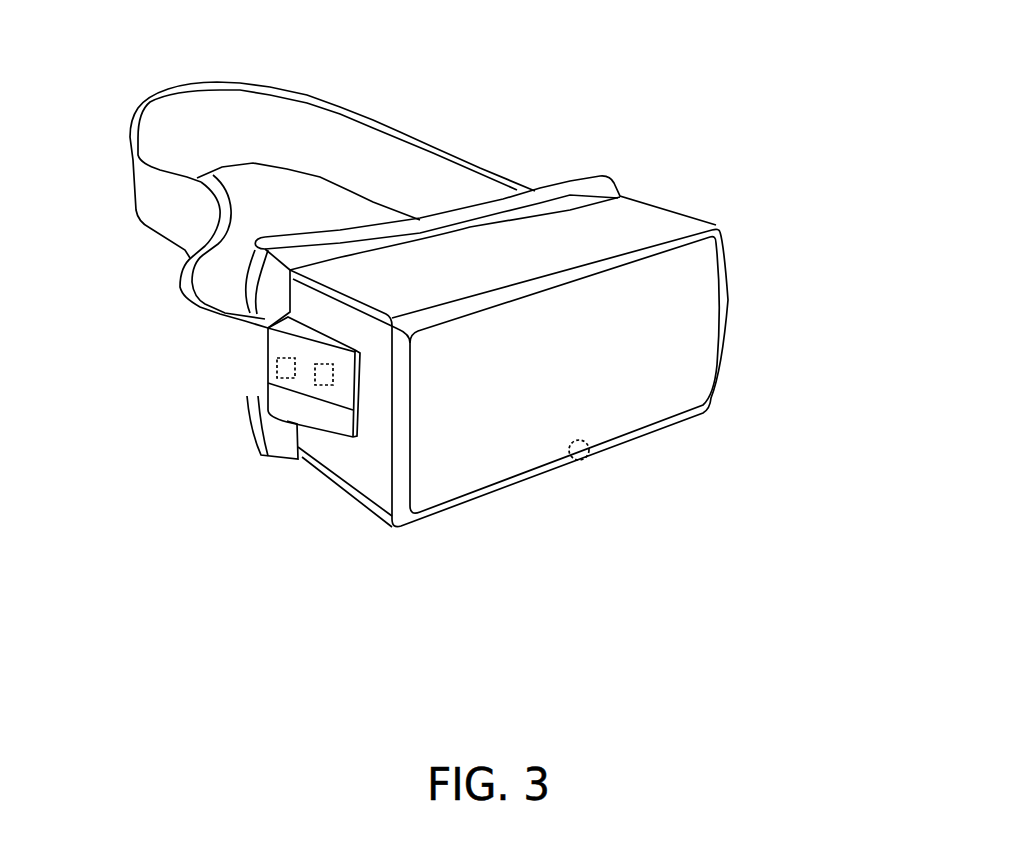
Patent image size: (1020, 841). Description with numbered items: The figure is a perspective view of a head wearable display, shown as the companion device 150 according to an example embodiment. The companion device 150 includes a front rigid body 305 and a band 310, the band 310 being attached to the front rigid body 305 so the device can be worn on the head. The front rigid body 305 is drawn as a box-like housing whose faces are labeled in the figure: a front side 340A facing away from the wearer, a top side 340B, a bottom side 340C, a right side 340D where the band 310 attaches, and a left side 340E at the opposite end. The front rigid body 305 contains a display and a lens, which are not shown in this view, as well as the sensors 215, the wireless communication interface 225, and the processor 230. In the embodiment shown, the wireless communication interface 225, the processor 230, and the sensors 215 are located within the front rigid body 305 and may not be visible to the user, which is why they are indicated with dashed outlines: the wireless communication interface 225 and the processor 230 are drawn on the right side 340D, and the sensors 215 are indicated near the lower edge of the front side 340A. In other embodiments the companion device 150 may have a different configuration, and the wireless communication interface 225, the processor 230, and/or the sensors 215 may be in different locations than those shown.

The companion device 150 is at (97, 24).
The band 310 is at (433, 147).
The front rigid body 305 is at (461, 369).
The front side 340A is at (644, 408).
The top side 340B is at (353, 272).
The bottom side 340C is at (318, 505).
The right side 340D is at (365, 469).
The left side 340E is at (699, 206).
The wireless communication interface 225 is at (263, 365).
The processor 230 is at (302, 395).
The sensors 215 is at (584, 469).